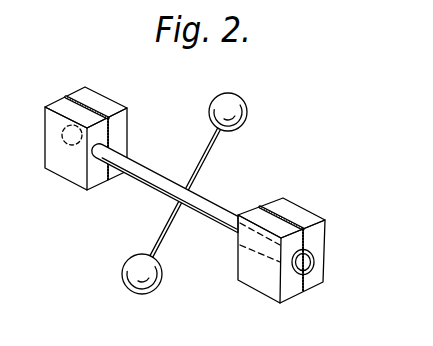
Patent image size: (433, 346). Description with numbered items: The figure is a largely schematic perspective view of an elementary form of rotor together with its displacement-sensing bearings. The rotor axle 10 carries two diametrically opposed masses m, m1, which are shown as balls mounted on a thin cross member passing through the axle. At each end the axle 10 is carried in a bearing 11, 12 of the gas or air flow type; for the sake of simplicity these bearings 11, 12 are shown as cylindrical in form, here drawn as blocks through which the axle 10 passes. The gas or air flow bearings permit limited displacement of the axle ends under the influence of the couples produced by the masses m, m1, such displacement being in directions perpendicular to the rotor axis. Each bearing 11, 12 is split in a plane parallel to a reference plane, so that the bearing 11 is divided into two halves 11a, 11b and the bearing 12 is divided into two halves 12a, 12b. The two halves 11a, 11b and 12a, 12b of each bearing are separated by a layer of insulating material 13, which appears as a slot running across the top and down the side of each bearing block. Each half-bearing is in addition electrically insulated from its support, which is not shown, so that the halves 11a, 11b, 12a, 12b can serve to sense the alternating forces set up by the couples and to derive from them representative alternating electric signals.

The rotor axle 10 is at (219, 208).
The bearing 11 is at (81, 121).
The bearing half 11a is at (97, 100).
The bearing half 11b is at (55, 166).
The bearing 12 is at (285, 247).
The bearing half 12a is at (324, 236).
The bearing half 12b is at (259, 283).
The layer of insulating material 13 is at (107, 183).
The mass m is at (241, 107).
The mass m1 is at (124, 273).